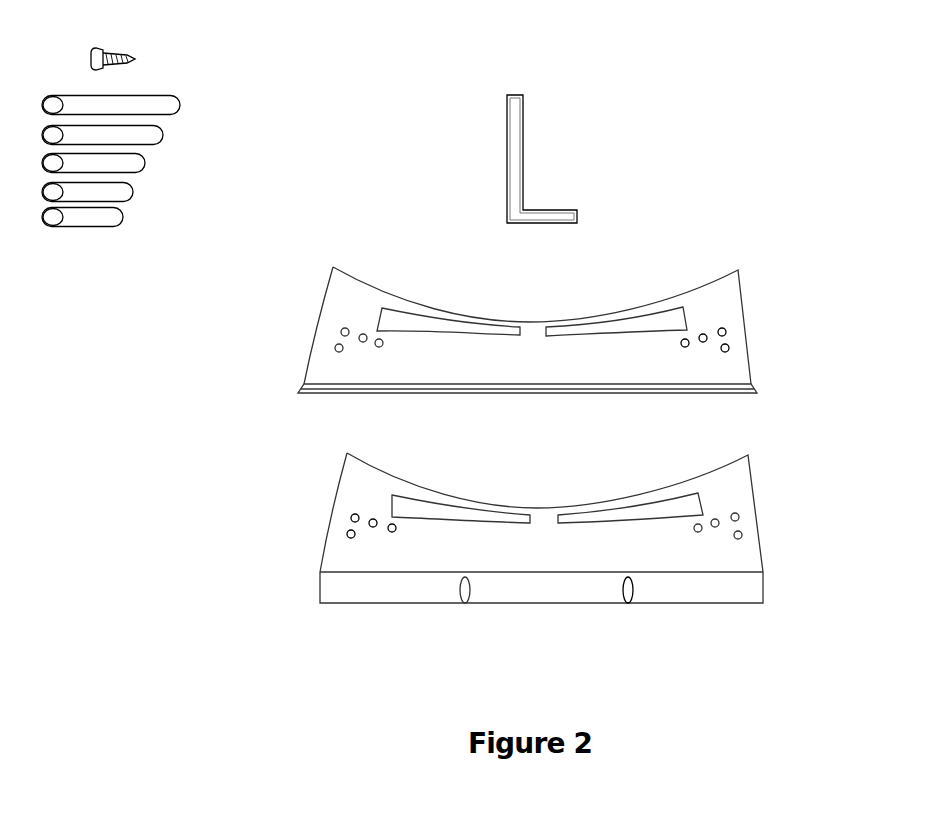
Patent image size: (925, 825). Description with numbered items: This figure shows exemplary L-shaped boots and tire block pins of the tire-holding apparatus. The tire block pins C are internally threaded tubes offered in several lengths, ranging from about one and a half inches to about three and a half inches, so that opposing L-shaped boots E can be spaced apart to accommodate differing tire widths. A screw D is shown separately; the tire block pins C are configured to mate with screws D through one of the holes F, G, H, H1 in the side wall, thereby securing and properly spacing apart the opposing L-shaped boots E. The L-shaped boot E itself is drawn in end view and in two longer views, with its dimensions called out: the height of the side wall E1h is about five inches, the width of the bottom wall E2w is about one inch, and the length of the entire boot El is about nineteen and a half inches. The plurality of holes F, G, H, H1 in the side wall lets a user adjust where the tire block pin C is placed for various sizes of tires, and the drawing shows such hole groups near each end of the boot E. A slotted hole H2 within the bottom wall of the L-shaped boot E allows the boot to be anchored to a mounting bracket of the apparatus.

The screw D is at (136, 44).
The tire block pin C is at (130, 237).
The L-shaped boot E is at (568, 103).
The height of the side wall E1h is at (493, 223).
The width of the bottom wall E2w is at (577, 232).
The length of the entire boot El is at (762, 397).
The hole F is at (688, 340).
The hole G is at (776, 256).
The hole H is at (776, 256).
The hole H1 is at (776, 256).
The slotted hole H2 is at (633, 591).